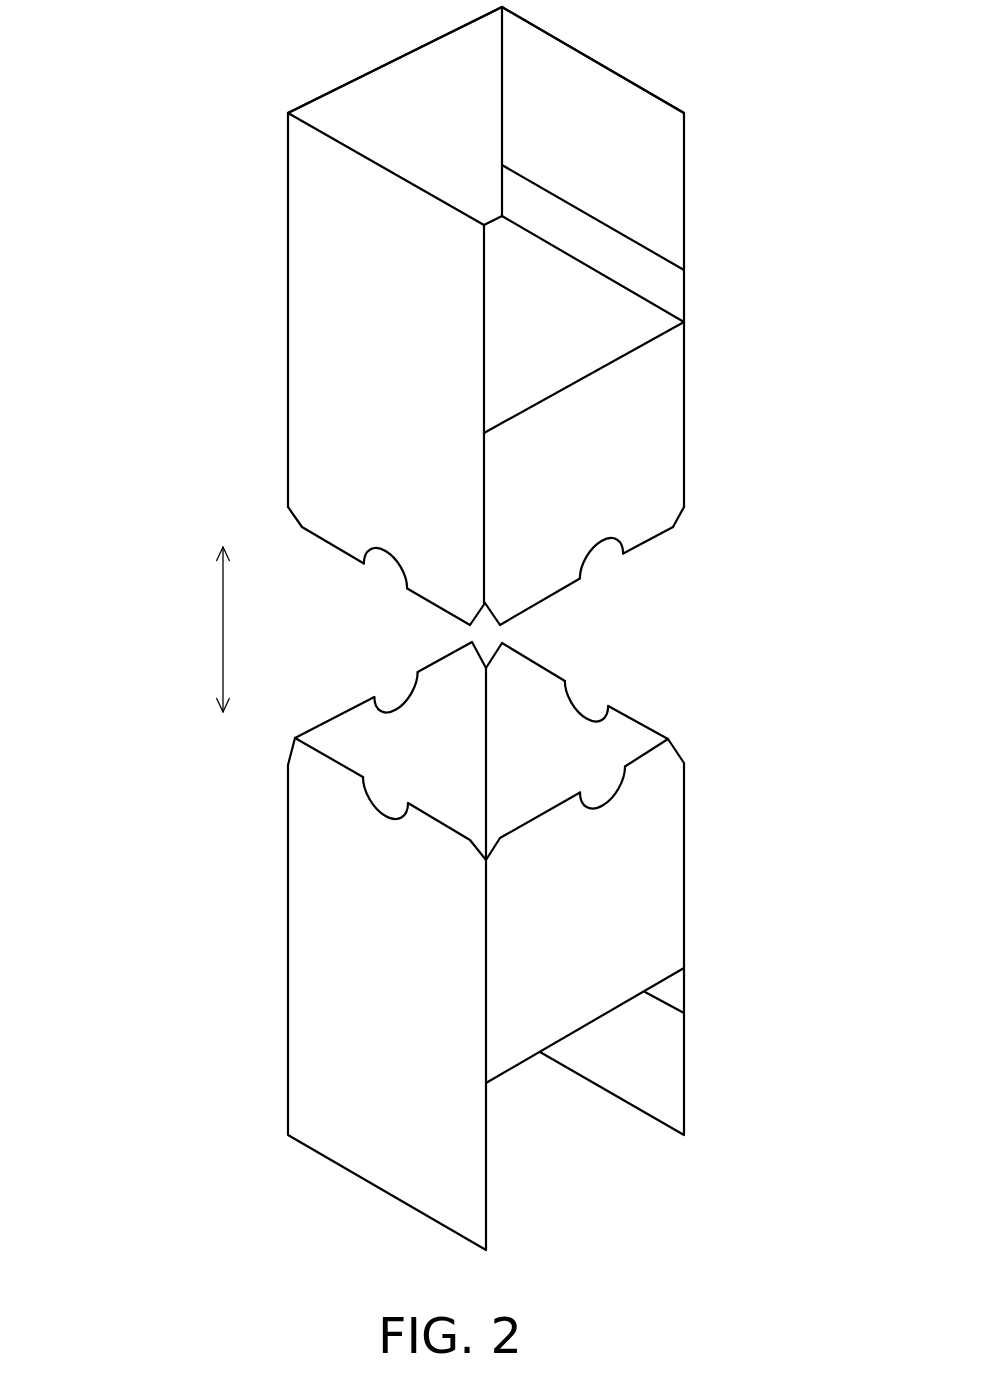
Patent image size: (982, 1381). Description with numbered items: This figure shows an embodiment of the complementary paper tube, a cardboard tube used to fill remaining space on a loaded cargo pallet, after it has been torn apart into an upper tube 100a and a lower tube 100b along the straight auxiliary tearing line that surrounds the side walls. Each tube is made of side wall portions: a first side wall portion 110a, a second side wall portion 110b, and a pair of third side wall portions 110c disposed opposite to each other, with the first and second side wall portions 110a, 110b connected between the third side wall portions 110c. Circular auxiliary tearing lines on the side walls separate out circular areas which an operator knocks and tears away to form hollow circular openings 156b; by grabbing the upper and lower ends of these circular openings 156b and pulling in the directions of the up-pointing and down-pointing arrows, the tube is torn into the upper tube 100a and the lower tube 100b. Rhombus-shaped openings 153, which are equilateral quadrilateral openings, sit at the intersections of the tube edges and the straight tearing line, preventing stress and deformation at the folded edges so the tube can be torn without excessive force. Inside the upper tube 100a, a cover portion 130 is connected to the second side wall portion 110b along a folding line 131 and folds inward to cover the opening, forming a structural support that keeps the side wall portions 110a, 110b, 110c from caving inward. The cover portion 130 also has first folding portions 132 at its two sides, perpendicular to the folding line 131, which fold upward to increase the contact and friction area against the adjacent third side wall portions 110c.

The upper tube 100a is at (262, 321).
The lower tube 100b is at (255, 930).
The first side wall portion 110a is at (397, 82).
The second side wall portion 110b is at (543, 578).
The third side wall portions 110c is at (632, 102).
The cover portion 130 is at (622, 335).
The folding line 131 is at (568, 385).
The first folding portions 132 is at (628, 273).
The rhombus-shaped openings 153 is at (677, 517).
The circular openings 156b is at (380, 565).